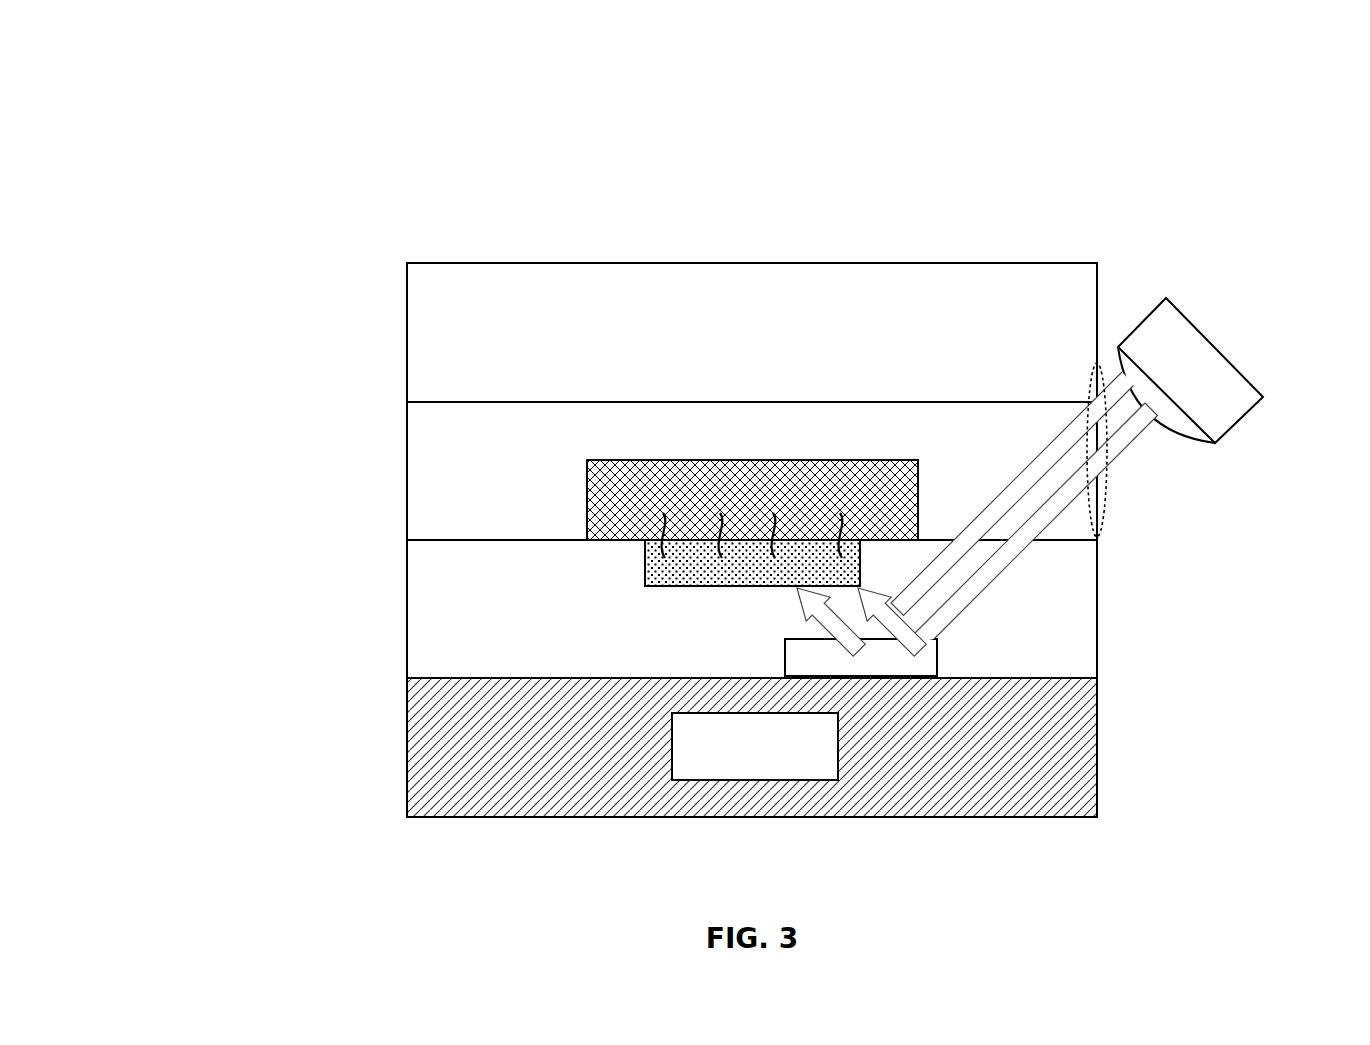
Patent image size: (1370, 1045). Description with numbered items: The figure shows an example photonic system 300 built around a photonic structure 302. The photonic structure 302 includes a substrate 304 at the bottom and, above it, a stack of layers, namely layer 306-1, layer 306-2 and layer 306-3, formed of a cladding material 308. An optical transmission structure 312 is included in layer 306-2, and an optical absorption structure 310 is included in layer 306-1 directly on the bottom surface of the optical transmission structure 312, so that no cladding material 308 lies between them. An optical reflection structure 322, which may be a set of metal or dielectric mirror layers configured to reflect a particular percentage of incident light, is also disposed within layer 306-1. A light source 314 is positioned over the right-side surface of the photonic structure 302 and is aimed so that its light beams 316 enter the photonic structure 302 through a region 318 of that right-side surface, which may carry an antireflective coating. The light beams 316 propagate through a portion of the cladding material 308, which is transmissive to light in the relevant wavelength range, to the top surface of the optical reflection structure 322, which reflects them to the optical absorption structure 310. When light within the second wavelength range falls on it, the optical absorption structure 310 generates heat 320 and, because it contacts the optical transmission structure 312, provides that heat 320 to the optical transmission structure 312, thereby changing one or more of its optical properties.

The photonic system 300 is at (268, 54).
The photonic structure 302 is at (373, 244).
The substrate 304 is at (752, 747).
The layer 306-1 is at (388, 618).
The layer 306-2 is at (388, 470).
The layer 306-3 is at (388, 331).
The cladding material 308 is at (466, 580).
The optical absorption structure 310 is at (645, 580).
The optical transmission structure 312 is at (693, 487).
The light source 314 is at (1178, 378).
The light beams 316 is at (1045, 468).
The region 318 is at (1103, 362).
The heat 320 is at (846, 530).
The optical reflection structure 322 is at (895, 665).